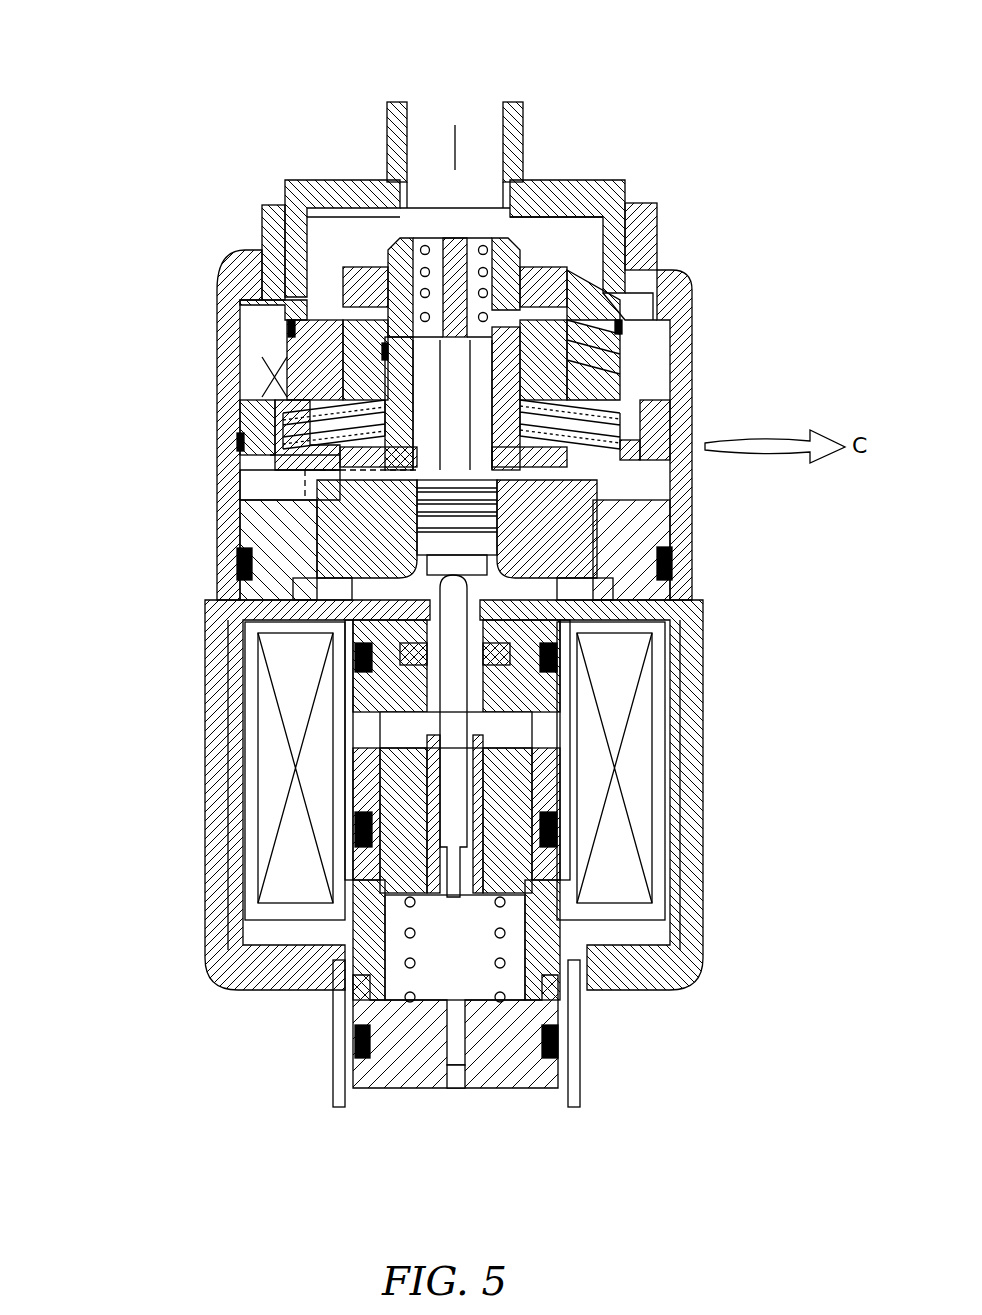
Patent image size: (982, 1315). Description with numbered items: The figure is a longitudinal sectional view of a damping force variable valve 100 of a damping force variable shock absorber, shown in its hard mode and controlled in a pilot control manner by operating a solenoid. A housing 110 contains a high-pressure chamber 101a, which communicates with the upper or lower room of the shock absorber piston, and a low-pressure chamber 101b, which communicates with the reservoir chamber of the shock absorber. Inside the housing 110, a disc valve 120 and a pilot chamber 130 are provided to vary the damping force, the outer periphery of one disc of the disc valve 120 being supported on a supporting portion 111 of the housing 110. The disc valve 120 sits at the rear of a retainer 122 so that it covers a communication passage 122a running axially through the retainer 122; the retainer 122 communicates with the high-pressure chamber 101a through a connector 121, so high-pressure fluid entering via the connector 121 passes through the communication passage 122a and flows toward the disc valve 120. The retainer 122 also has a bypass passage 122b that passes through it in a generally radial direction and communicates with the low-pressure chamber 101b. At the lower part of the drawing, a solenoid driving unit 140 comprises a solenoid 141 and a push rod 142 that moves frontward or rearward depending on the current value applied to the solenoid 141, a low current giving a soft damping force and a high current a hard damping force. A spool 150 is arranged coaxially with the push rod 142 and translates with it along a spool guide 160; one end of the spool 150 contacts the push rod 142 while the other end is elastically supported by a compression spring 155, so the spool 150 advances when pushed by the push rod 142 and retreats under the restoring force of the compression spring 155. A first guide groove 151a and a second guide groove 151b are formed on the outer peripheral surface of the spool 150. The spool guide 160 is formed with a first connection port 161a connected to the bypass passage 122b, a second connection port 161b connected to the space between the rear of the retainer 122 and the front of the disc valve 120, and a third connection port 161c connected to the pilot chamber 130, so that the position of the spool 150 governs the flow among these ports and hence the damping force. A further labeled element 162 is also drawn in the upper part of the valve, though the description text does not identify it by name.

The damping force variable valve 100 is at (175, 1010).
The high-pressure chamber 101a is at (412, 140).
The low-pressure chamber 101b is at (633, 205).
The housing 110 is at (226, 543).
The supporting portion 111 is at (243, 415).
The disc valve 120 is at (322, 478).
The connector 121 is at (620, 225).
The retainer 122 is at (312, 365).
The communication passage 122a is at (300, 355).
The bypass passage 122b is at (636, 400).
The pilot chamber 130 is at (263, 496).
The solenoid driving unit 140 is at (620, 926).
The solenoid 141 is at (662, 793).
The push rod 142 is at (458, 606).
The spool 150 is at (560, 493).
The first guide groove 151a is at (452, 340).
The second guide groove 151b is at (457, 340).
The compression spring 155 is at (593, 307).
The spool guide 160 is at (575, 500).
The first connection port 161a is at (620, 332).
The second connection port 161b is at (607, 447).
The third connection port 161c is at (470, 470).
The spring guide 162 is at (398, 330).